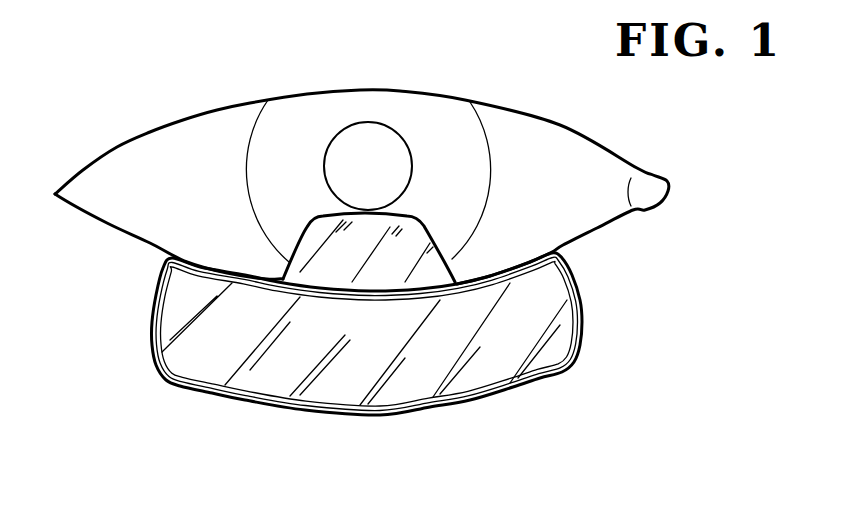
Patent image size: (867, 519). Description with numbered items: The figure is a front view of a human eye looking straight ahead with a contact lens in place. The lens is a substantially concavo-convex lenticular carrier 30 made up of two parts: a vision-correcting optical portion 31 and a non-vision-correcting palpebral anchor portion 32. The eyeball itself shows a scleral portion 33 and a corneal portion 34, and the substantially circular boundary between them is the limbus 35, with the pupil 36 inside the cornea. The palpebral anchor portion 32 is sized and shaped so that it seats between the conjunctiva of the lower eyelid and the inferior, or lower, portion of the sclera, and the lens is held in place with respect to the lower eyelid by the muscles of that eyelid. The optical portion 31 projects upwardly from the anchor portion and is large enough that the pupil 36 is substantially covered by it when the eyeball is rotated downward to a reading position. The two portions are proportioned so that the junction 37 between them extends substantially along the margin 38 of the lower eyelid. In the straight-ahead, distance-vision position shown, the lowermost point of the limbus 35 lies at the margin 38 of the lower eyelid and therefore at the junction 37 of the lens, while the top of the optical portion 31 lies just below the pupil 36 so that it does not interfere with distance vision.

The lenticular carrier 30 is at (513, 392).
The optical portion 31 is at (327, 237).
The palpebral anchor portion 32 is at (302, 385).
The scleral portion 33 is at (572, 173).
The corneal portion 34 is at (442, 118).
The limbus 35 is at (492, 152).
The pupil 36 is at (373, 147).
The junction 37 is at (370, 298).
The margin of the lower eyelid 38 is at (148, 247).